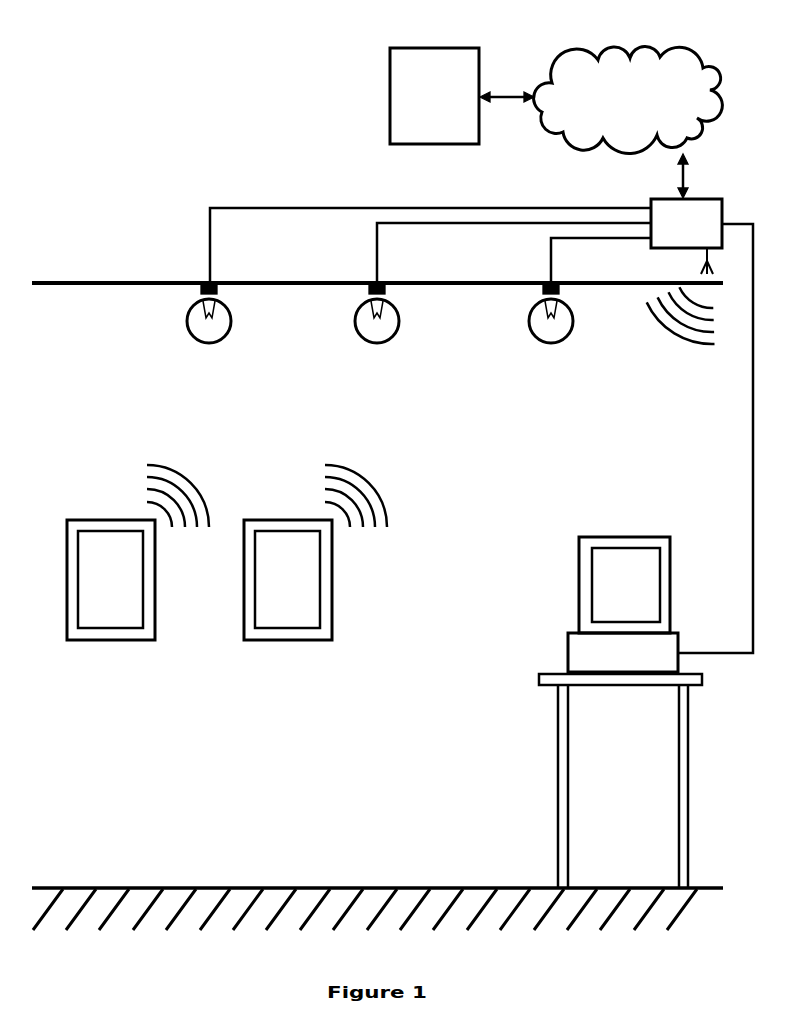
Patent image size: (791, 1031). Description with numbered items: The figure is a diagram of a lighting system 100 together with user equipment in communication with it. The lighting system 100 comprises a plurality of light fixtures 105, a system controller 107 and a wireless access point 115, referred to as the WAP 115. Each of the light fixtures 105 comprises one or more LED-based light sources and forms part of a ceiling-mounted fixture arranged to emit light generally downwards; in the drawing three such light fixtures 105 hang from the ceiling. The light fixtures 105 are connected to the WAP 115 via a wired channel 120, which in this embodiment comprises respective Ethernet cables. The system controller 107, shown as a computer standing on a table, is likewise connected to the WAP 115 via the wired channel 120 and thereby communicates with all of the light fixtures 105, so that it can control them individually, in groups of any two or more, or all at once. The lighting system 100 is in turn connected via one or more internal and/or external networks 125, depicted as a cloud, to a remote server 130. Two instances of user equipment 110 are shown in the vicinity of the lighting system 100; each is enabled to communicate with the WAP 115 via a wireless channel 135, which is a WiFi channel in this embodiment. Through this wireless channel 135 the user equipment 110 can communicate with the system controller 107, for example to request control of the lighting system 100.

The lighting system 100 is at (160, 111).
The light fixtures 105 is at (226, 328).
The system controller 107 is at (611, 665).
The user equipment 110 is at (96, 620).
The wireless access point 115 is at (672, 233).
The wired channel 120 is at (210, 257).
The networks 125 is at (616, 107).
The remote server 130 is at (420, 107).
The wireless channel 135 is at (718, 341).